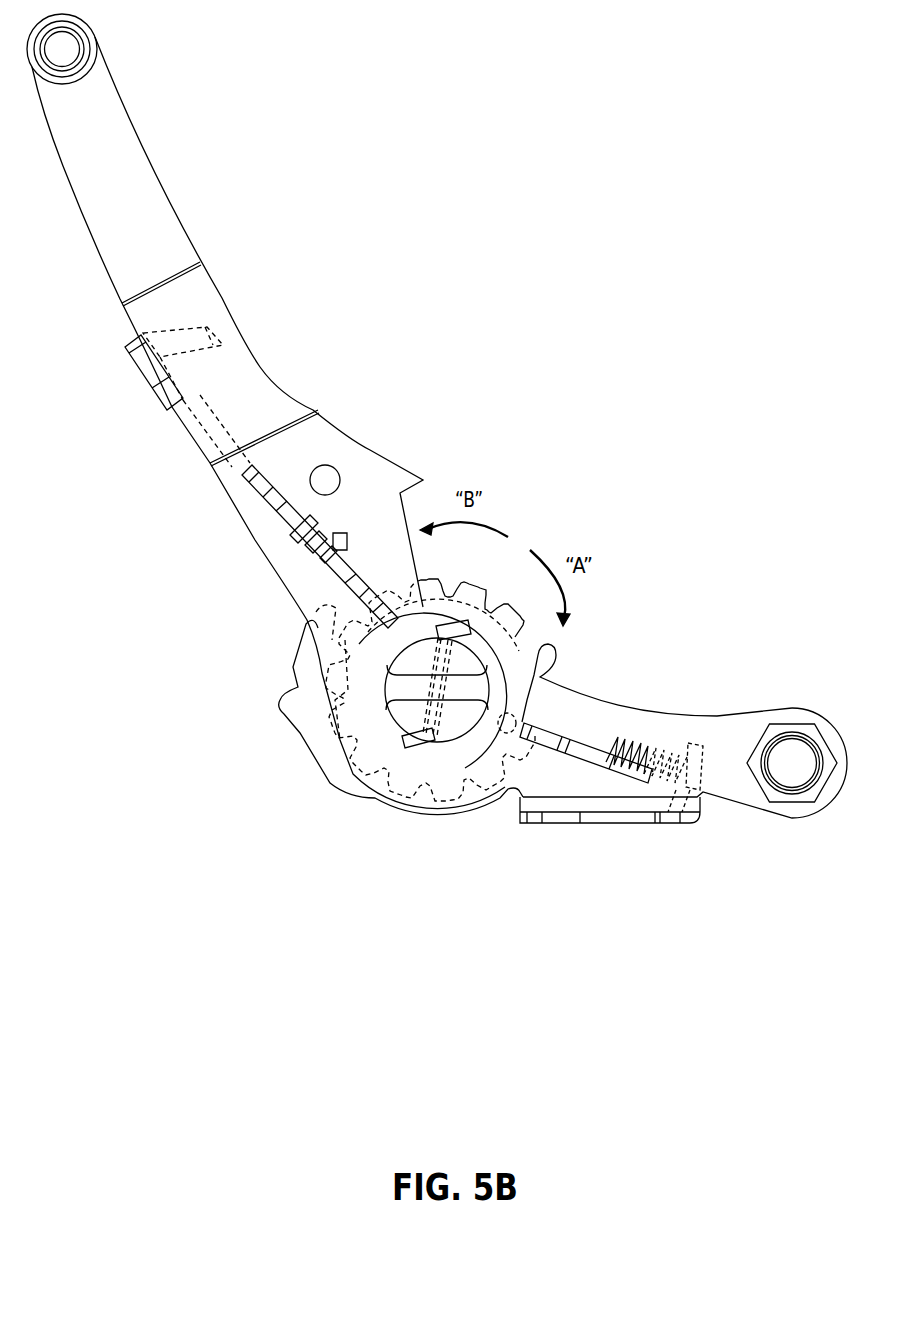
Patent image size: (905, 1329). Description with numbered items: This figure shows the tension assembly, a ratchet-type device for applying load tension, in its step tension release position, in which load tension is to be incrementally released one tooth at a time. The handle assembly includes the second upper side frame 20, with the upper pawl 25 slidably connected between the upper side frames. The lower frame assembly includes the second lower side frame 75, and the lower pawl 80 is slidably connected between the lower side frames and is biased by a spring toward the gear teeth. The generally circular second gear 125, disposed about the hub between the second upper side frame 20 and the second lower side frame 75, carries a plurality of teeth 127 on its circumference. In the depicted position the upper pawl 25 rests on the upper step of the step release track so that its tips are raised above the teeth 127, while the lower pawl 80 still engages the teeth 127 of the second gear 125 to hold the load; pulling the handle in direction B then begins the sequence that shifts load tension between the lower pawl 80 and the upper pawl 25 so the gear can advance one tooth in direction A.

The second upper side frame 20 is at (123, 170).
The upper pawl 25 is at (263, 480).
The second lower side frame 75 is at (733, 783).
The lower pawl 80 is at (588, 752).
The second gear 125 is at (385, 738).
The teeth 127 is at (430, 783).